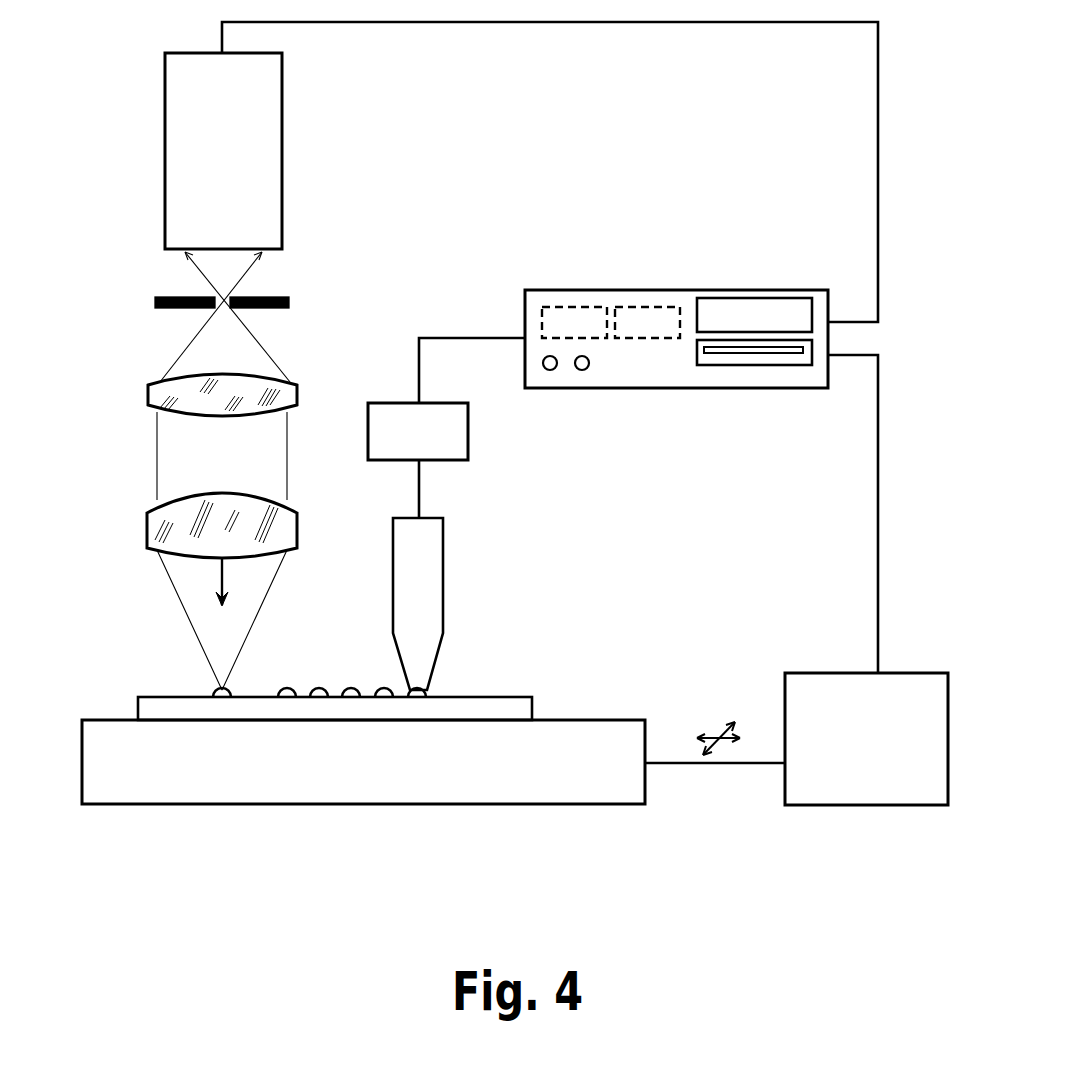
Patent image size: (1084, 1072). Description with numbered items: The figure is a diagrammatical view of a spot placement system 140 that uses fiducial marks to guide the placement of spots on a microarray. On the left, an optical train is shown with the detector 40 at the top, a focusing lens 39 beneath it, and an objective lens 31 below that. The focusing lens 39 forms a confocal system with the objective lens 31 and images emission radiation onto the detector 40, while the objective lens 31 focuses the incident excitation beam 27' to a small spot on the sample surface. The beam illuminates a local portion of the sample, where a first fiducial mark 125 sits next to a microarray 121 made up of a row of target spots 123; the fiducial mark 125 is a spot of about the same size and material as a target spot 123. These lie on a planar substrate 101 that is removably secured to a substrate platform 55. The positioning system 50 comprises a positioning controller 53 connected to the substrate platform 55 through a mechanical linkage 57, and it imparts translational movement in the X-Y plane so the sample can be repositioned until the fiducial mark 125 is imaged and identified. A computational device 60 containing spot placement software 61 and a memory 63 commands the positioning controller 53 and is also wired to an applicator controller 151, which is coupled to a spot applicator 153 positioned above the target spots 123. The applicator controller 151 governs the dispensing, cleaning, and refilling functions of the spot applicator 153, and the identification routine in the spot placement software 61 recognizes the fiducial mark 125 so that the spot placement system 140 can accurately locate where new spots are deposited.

The detector 40 is at (284, 108).
The focusing lens 39 is at (297, 385).
The objective lens 31 is at (297, 525).
The incident excitation beam 27' is at (166, 583).
The first fiducial mark 125 is at (213, 692).
The target spots 123 is at (323, 690).
The microarray 121 is at (318, 634).
The planar substrate 101 is at (533, 706).
The substrate platform 55 is at (634, 720).
The mechanical linkage 57 is at (677, 764).
The positioning controller 53 is at (824, 675).
The positioning system 50 is at (716, 608).
The computational device 60 is at (776, 290).
The spot placement software 61 is at (567, 307).
The memory 63 is at (650, 307).
The applicator controller 151 is at (470, 438).
The spot applicator 153 is at (444, 555).
The spot placement system 140 is at (516, 881).